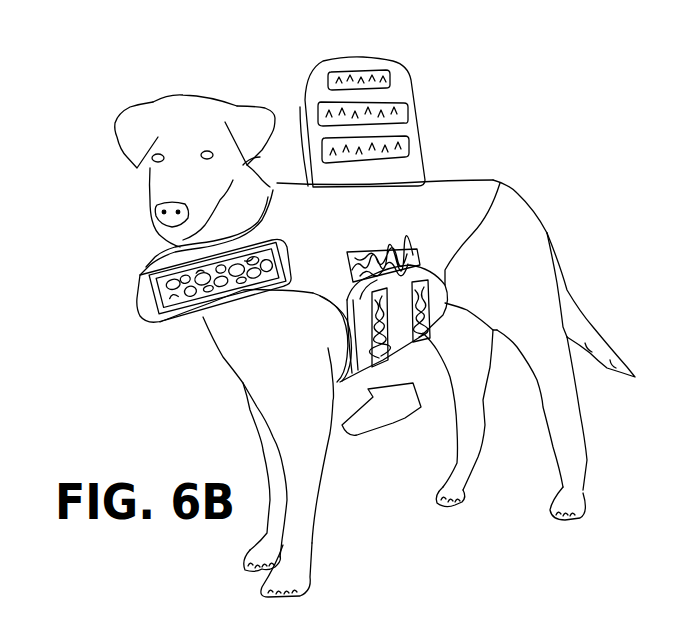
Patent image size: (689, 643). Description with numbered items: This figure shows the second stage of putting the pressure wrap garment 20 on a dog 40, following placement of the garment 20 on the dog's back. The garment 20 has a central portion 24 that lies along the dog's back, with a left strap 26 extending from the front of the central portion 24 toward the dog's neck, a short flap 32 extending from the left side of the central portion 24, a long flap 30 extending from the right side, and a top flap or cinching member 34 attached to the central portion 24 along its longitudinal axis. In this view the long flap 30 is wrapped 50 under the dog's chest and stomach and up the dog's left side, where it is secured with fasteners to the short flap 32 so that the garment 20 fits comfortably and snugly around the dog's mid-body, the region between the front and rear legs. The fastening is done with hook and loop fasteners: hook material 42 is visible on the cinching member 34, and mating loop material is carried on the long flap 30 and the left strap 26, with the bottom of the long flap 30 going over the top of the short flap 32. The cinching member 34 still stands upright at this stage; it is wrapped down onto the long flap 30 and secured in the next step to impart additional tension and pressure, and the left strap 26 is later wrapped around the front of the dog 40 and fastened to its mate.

The pressure wrap garment 20 is at (463, 99).
The central portion 24 is at (477, 188).
The left strap 26 is at (143, 300).
The long flap 30 is at (435, 293).
The short flap 32 is at (343, 317).
The cinching member 34 is at (362, 63).
The dog 40 is at (201, 104).
The hook material 42 is at (320, 110).
The wrapping of the long flap 50 is at (385, 423).